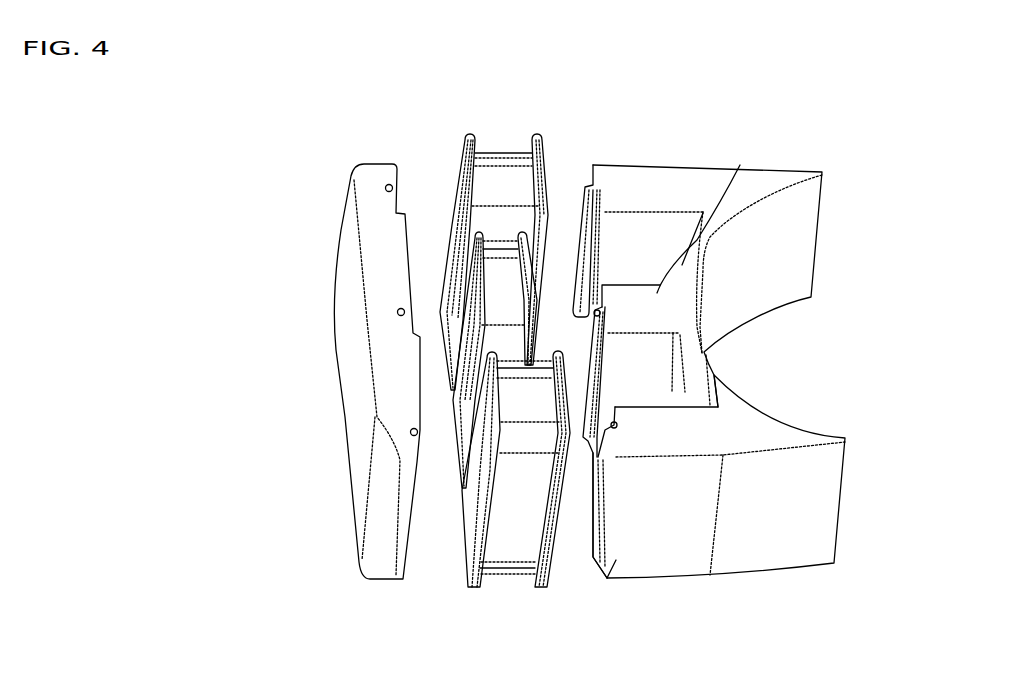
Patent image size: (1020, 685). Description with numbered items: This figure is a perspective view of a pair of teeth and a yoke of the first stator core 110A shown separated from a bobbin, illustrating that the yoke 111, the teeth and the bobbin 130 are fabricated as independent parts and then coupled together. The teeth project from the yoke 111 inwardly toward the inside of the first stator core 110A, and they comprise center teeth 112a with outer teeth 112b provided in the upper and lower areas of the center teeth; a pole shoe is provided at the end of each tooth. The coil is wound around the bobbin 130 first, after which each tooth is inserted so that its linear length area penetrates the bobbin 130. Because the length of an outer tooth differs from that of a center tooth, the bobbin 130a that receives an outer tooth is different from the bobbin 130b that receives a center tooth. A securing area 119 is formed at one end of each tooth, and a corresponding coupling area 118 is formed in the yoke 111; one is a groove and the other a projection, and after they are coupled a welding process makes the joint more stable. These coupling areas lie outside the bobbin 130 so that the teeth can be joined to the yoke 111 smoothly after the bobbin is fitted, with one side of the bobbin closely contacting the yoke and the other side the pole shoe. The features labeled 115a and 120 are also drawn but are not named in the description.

The first stator core 110A is at (700, 358).
The yoke 111 is at (385, 417).
The center teeth 112a is at (740, 165).
The outer teeth 112b is at (680, 173).
The connecting bar 115a is at (508, 153).
The coupling area 118 is at (418, 432).
The securing area 119 is at (608, 560).
The coupling unit 120 is at (567, 623).
The bobbin 130 is at (422, 336).
The bobbin for outer tooth 130a is at (539, 143).
The bobbin for center tooth 130b is at (478, 268).